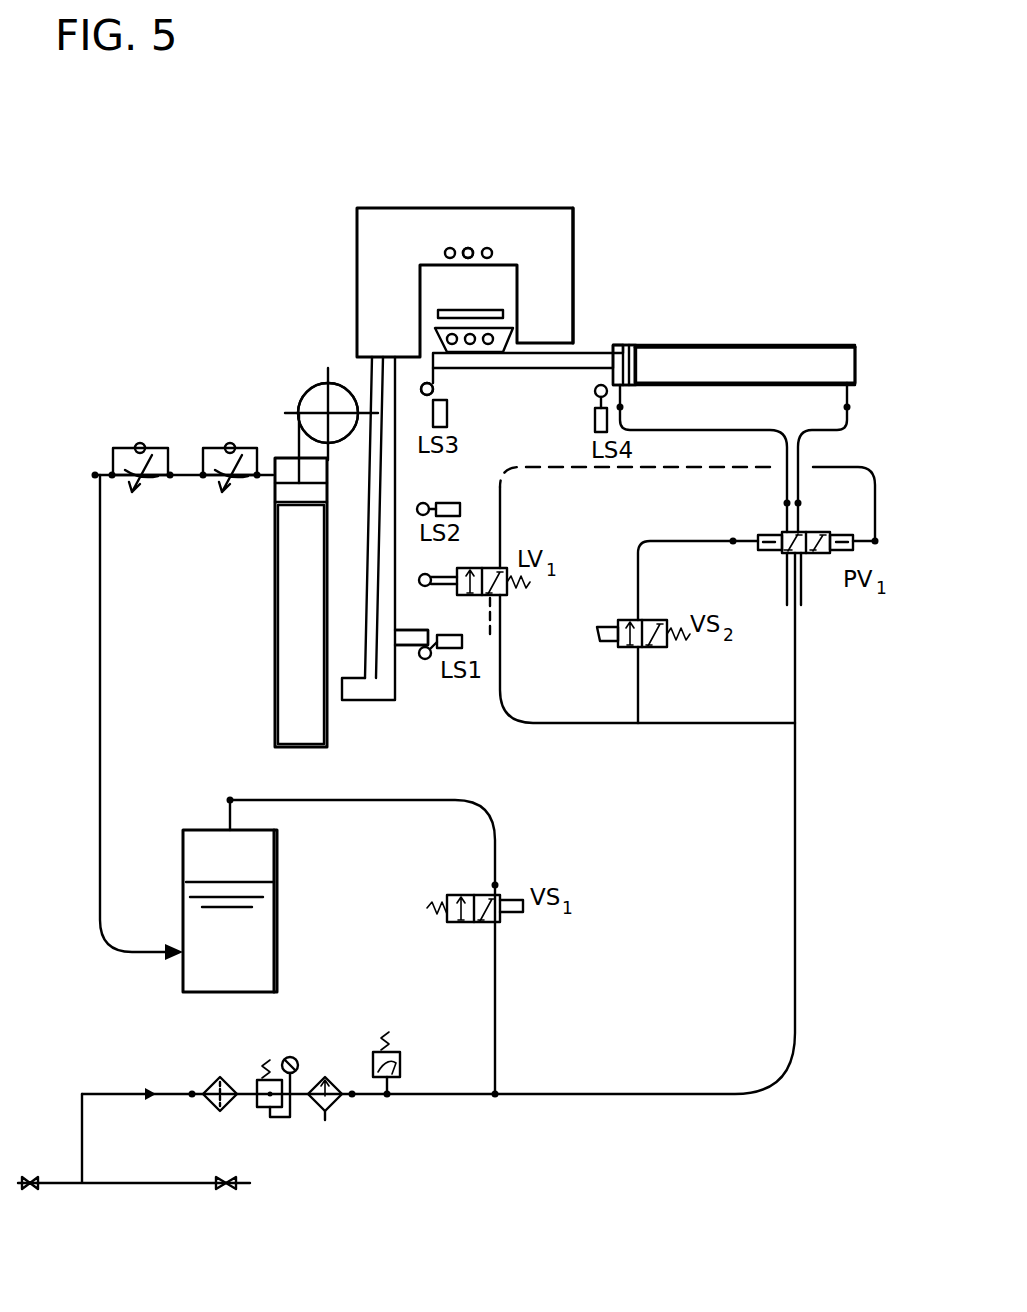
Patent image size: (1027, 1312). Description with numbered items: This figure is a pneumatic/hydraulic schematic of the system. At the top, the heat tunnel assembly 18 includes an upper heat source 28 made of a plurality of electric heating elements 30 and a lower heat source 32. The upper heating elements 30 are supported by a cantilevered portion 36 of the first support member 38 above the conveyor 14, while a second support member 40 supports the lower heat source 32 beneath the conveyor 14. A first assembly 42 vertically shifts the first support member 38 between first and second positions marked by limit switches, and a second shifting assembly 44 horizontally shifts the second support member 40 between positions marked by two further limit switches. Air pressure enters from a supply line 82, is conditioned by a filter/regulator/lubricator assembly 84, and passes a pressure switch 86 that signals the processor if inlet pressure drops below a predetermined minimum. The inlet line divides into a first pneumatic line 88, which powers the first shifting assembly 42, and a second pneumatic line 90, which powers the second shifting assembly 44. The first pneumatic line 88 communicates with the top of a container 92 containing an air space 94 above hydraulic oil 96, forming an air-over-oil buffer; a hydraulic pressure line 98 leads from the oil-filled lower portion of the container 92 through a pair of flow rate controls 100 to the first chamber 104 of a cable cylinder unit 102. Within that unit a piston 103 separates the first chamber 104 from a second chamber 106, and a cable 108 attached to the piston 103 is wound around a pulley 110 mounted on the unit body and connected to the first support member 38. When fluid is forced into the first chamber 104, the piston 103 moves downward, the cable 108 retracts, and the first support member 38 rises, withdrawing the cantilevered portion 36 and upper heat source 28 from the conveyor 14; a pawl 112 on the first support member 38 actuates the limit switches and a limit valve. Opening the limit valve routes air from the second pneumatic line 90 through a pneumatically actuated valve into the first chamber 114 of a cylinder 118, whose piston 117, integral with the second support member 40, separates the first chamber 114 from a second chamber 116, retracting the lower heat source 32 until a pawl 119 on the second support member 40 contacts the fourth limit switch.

The heat tunnel assembly 18 is at (590, 171).
The cantilevered portion 36 is at (418, 207).
The lower heat source 32 is at (432, 308).
The electric heating elements 30 is at (451, 247).
The upper heat source 28 is at (469, 254).
The conveyor 14 is at (500, 313).
The second support member 40 is at (574, 355).
The second shifting assembly 44 is at (709, 343).
The first chamber 114 is at (619, 345).
The piston 117 is at (614, 348).
The cylinder 118 is at (771, 345).
The second chamber 116 is at (803, 366).
The first assembly 42 is at (274, 404).
The first support member 38 is at (372, 360).
The pulley 110 is at (330, 384).
The cable 108 is at (297, 432).
The flow rate controls 100 is at (230, 444).
The pawl 119 is at (438, 384).
The first chamber 104 is at (290, 480).
The piston 103 is at (300, 500).
The hydraulic pressure line 98 is at (99, 594).
The cable cylinder unit 102 is at (274, 577).
The second chamber 106 is at (288, 641).
The pawl 112 is at (416, 633).
The first pneumatic line 88 is at (482, 812).
The second pneumatic line 90 is at (796, 803).
The air space 94 is at (255, 863).
The hydraulic oil 96 is at (236, 927).
The container 92 is at (279, 973).
The filter/regulator/lubricator assembly 84 is at (247, 1076).
The pressure switch 86 is at (401, 1062).
The supply line 82 is at (132, 1183).